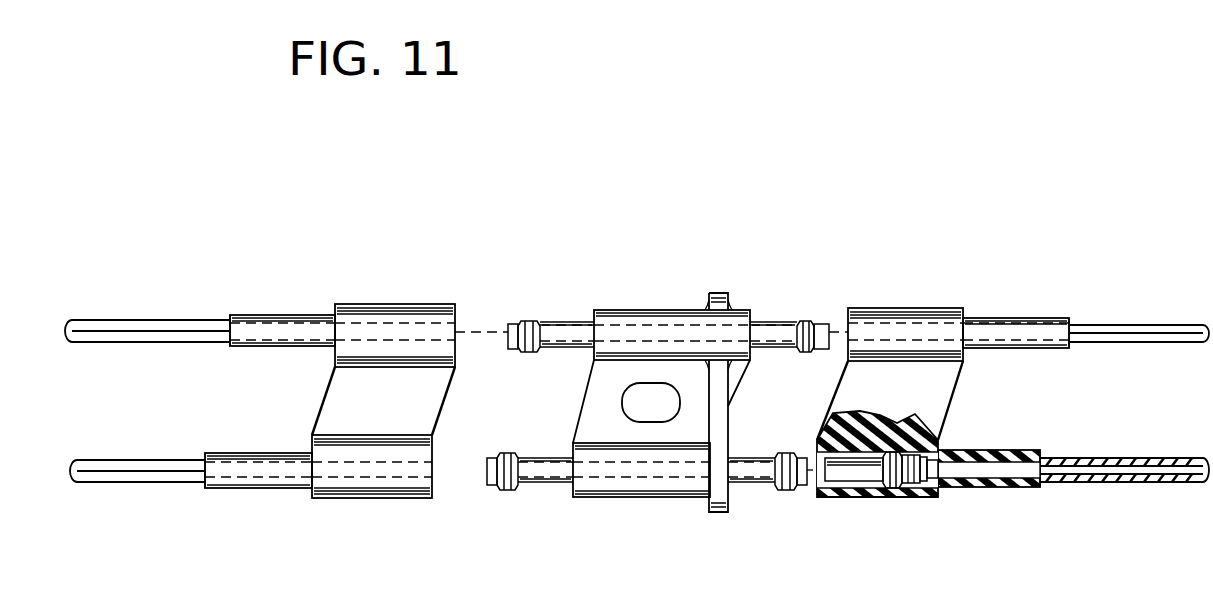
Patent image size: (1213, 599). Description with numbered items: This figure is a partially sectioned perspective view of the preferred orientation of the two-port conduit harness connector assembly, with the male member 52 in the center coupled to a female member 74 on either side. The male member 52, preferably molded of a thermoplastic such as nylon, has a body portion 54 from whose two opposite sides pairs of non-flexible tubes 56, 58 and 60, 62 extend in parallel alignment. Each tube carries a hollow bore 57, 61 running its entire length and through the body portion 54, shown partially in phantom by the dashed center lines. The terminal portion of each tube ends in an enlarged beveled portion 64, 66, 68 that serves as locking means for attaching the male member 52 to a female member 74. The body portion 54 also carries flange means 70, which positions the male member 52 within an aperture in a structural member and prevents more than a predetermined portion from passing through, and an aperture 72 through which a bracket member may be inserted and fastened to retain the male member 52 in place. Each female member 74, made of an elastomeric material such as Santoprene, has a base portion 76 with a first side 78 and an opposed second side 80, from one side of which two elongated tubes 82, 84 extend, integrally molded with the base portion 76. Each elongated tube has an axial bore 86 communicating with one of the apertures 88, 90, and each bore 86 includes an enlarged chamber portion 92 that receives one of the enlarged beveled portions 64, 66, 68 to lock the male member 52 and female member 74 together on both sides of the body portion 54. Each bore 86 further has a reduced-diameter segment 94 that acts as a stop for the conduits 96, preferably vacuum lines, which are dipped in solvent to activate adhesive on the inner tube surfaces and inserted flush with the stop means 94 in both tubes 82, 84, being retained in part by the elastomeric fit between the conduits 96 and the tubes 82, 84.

The two-port male member 52 is at (673, 402).
The body portion 54 is at (590, 392).
The non-flexible tube 56 is at (553, 484).
The hollow bore 57 is at (816, 488).
The non-flexible tube 58 is at (752, 476).
The non-flexible tube 60 is at (565, 326).
The hollow bore 61 is at (830, 328).
The non-flexible tube 62 is at (772, 331).
The enlarged beveled portion 64 is at (525, 321).
The enlarged beveled portion 66 is at (806, 320).
The enlarged beveled portion 68 is at (787, 491).
The flange means 70 is at (729, 436).
The aperture 72 is at (658, 388).
The female member 74 is at (341, 401).
The base portion 76 is at (392, 405).
The first side 78 is at (327, 408).
The second side 80 is at (439, 419).
The elongated tube 82 is at (260, 317).
The elongated tube 84 is at (268, 480).
The axial bore 86 is at (223, 316).
The aperture 88 is at (863, 474).
The aperture 90 is at (119, 320).
The enlarged chamber portion 92 is at (895, 491).
The reduced diameter segment (stop means) 94 is at (928, 494).
The conduit 96 is at (115, 468).